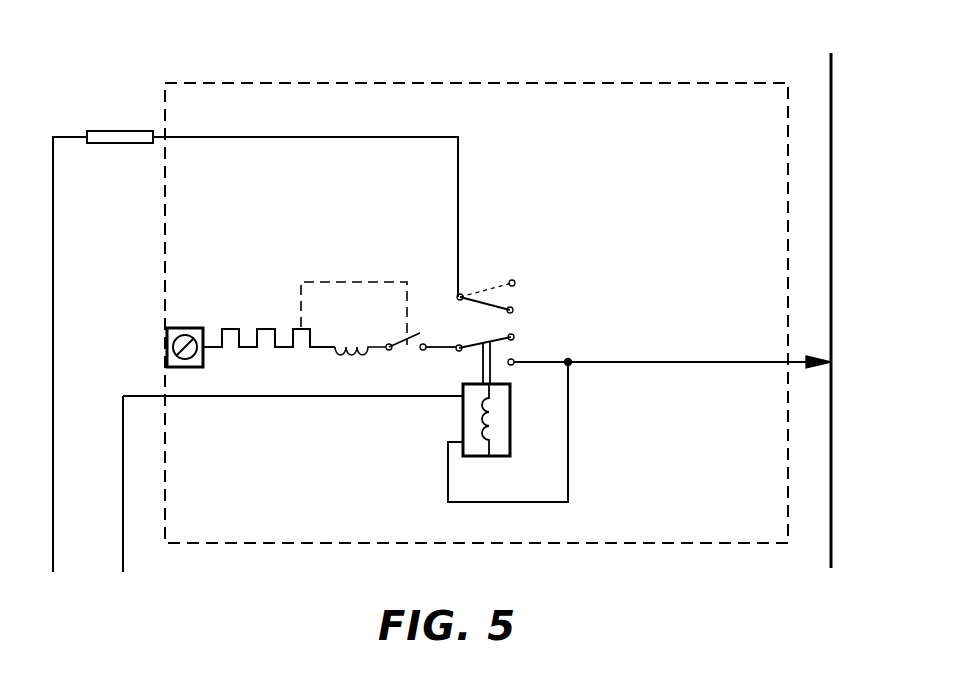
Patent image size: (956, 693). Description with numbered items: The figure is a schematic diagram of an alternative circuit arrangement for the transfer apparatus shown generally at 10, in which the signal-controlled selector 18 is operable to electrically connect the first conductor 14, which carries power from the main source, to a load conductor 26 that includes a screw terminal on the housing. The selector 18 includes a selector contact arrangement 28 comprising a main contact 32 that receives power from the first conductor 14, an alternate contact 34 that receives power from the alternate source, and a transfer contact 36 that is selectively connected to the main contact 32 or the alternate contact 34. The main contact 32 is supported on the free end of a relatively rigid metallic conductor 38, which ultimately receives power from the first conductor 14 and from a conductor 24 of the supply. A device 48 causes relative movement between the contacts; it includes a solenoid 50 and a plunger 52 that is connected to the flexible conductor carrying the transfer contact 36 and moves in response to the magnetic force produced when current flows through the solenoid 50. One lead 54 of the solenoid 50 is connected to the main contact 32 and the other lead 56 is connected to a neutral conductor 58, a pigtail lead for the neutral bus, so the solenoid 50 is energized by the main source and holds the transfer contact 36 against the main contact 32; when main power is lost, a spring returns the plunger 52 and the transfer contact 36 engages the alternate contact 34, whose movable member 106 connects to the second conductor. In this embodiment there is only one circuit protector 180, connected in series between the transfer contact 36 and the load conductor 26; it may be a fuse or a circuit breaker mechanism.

The control system 10 is at (560, 63).
The first conductor 14 is at (798, 356).
The signal-controlled selector 18 is at (73, 136).
The power conductor 24 is at (832, 168).
The load conductor 26 is at (168, 330).
The selector contact arrangement 28 is at (543, 299).
The main contact 32 is at (514, 360).
The alternate contact 34 is at (513, 304).
The transfer contact 36 is at (513, 337).
The metallic conductor 38 is at (536, 364).
The device 48 is at (519, 460).
The solenoid 50 is at (486, 442).
The plunger 52 is at (482, 363).
The lead 54 is at (570, 410).
The lead 56 is at (336, 398).
The neutral conductor 58 is at (122, 543).
The movable member 106 is at (489, 300).
The circuit protector 180 is at (281, 283).